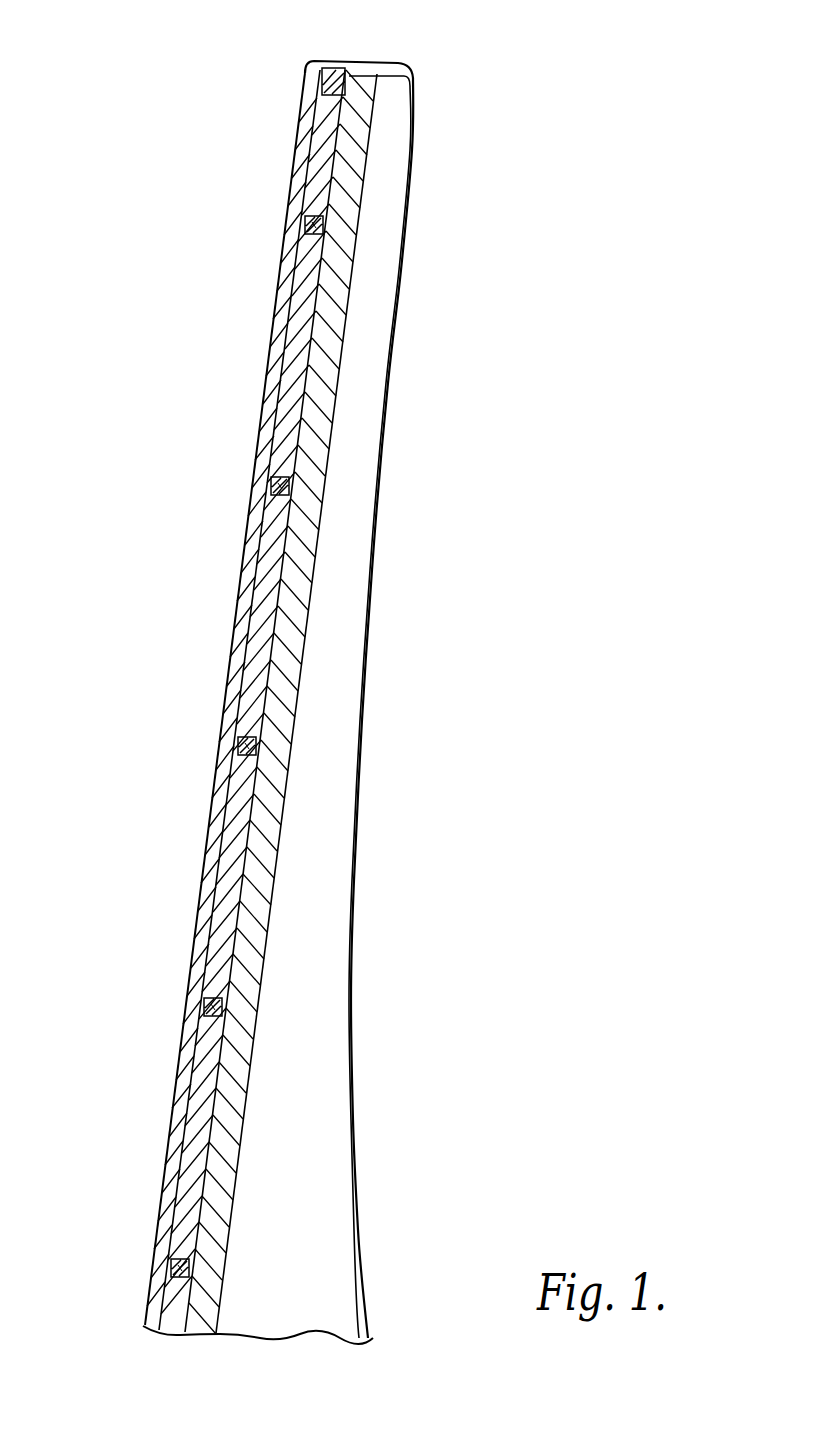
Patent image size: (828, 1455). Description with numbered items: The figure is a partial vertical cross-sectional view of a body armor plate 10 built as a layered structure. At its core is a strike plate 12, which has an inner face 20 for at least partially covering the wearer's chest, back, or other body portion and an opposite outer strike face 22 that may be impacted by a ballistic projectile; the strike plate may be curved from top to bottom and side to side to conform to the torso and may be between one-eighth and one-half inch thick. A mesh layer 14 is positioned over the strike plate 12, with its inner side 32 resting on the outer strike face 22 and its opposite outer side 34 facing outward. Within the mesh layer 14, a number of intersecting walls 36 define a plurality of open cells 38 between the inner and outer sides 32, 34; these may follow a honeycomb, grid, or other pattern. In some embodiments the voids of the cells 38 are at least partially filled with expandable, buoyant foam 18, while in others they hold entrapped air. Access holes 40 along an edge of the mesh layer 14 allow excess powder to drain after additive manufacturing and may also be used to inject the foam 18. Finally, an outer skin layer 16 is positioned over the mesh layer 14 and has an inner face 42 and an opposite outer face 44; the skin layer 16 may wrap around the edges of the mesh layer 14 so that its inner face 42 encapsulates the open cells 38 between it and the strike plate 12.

The body armor plate 10 is at (478, 58).
The strike plate 12 is at (400, 123).
The mesh layer 14 is at (323, 137).
The outer skin layer 16 is at (312, 81).
The expandable, buoyant foam 18 is at (176, 1316).
The inner face 20 is at (363, 458).
The outer strike face 22 is at (303, 393).
The inner side 32 is at (267, 718).
The outer side 34 is at (228, 865).
The intersecting walls 36 is at (275, 481).
The open cells 38 is at (316, 214).
The access holes 40 is at (341, 68).
The inner face 42 is at (300, 278).
The outer face 44 is at (268, 368).